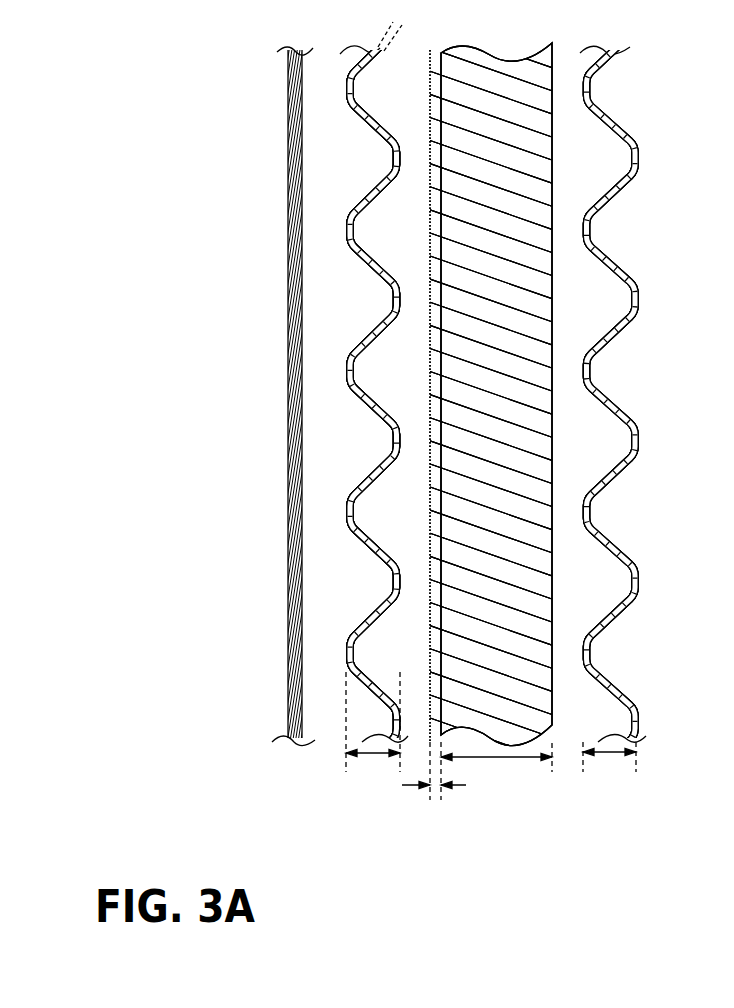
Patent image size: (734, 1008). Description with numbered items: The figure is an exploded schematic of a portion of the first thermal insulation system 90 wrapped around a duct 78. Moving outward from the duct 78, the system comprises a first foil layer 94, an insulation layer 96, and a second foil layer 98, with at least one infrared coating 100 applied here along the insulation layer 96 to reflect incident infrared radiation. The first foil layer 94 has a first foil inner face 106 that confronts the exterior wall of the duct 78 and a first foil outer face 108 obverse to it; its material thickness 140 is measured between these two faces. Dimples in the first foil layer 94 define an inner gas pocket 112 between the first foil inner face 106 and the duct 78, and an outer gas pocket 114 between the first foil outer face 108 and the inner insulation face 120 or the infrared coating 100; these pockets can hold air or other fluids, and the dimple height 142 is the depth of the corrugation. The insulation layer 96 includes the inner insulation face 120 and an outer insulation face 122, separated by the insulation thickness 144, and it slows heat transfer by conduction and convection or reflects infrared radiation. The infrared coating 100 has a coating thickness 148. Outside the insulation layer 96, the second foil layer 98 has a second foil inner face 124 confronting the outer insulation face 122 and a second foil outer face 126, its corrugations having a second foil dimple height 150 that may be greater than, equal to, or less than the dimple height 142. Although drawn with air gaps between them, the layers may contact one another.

The duct 78 is at (287, 410).
The first thermal insulation system 90 is at (638, 118).
The first foil layer 94 is at (383, 312).
The insulation layer 96 is at (437, 81).
The second foil layer 98 is at (637, 158).
The infrared coating 100 is at (430, 150).
The first foil inner face 106 is at (346, 368).
The first foil outer face 108 is at (355, 257).
The inner gas pocket 112 is at (336, 602).
The outer gas pocket 114 is at (382, 532).
The inner insulation face 120 is at (432, 436).
The outer insulation face 122 is at (552, 590).
The second foil inner face 124 is at (617, 280).
The second foil outer face 126 is at (618, 333).
The material thickness 140 is at (400, 38).
The dimple height 142 is at (373, 755).
The insulation thickness 144 is at (492, 758).
The coating thickness 148 is at (408, 787).
The second foil dimple height 150 is at (612, 755).